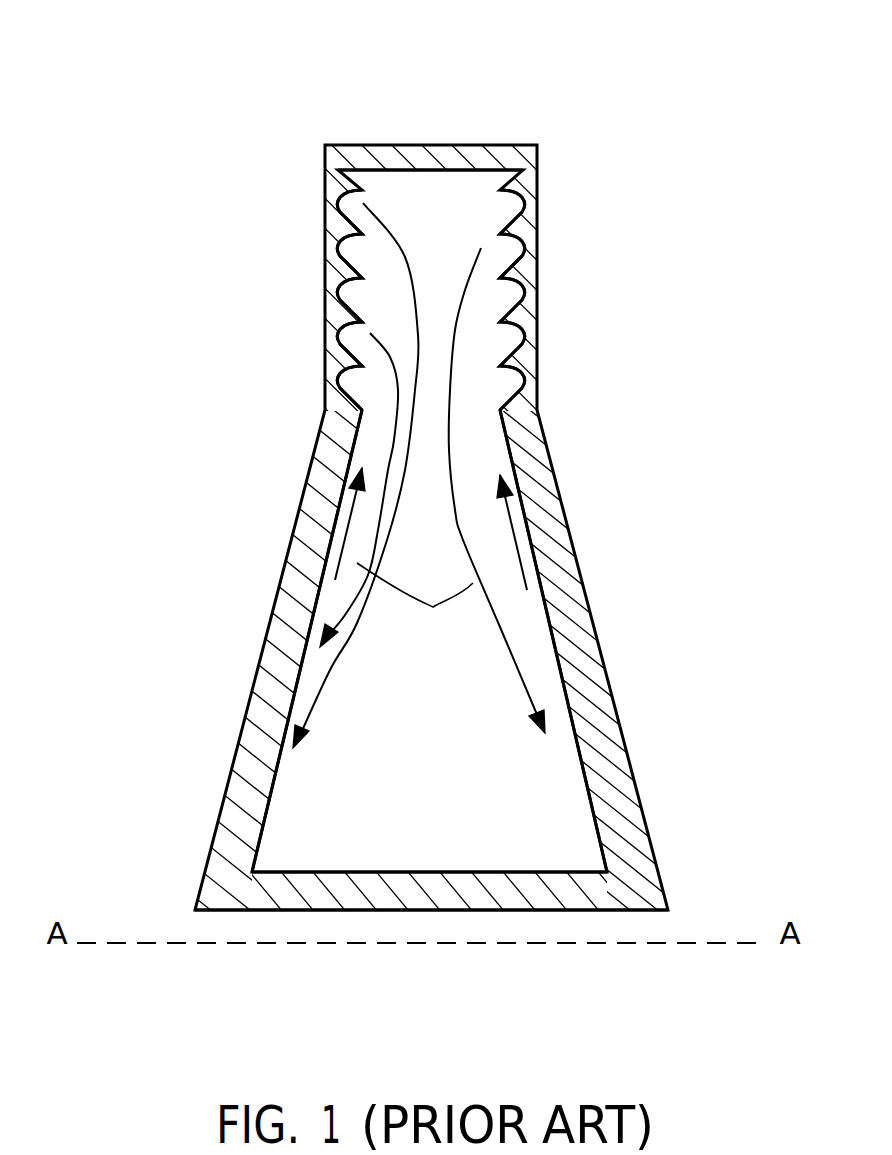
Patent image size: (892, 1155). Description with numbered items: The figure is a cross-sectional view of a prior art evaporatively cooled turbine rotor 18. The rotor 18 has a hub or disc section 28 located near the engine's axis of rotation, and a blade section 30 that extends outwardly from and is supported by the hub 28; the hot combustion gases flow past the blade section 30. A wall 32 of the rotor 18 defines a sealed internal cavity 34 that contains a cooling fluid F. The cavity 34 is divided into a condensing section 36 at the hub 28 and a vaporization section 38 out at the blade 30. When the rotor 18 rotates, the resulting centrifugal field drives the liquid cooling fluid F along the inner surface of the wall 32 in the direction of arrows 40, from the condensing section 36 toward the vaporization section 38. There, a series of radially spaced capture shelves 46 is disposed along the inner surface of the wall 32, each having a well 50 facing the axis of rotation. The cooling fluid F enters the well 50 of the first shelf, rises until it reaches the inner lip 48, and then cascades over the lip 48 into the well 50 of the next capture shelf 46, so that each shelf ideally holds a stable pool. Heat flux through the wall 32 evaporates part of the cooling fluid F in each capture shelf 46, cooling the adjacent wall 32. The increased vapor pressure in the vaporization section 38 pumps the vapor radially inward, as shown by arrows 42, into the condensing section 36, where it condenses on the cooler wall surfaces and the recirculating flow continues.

The turbine rotor 18 is at (446, 577).
The hub or disc section 28 is at (206, 843).
The blade section 30 is at (545, 184).
The wall 32 is at (596, 685).
The internal cavity 34 is at (418, 513).
The condensing section 36 is at (416, 782).
The vaporization section 38 is at (416, 227).
The arrows 40 is at (340, 557).
The arrows 42 is at (415, 605).
The capture shelves 46 is at (506, 350).
The inner lip 48 is at (350, 353).
The well 50 is at (506, 298).
The cooling fluid F is at (343, 237).